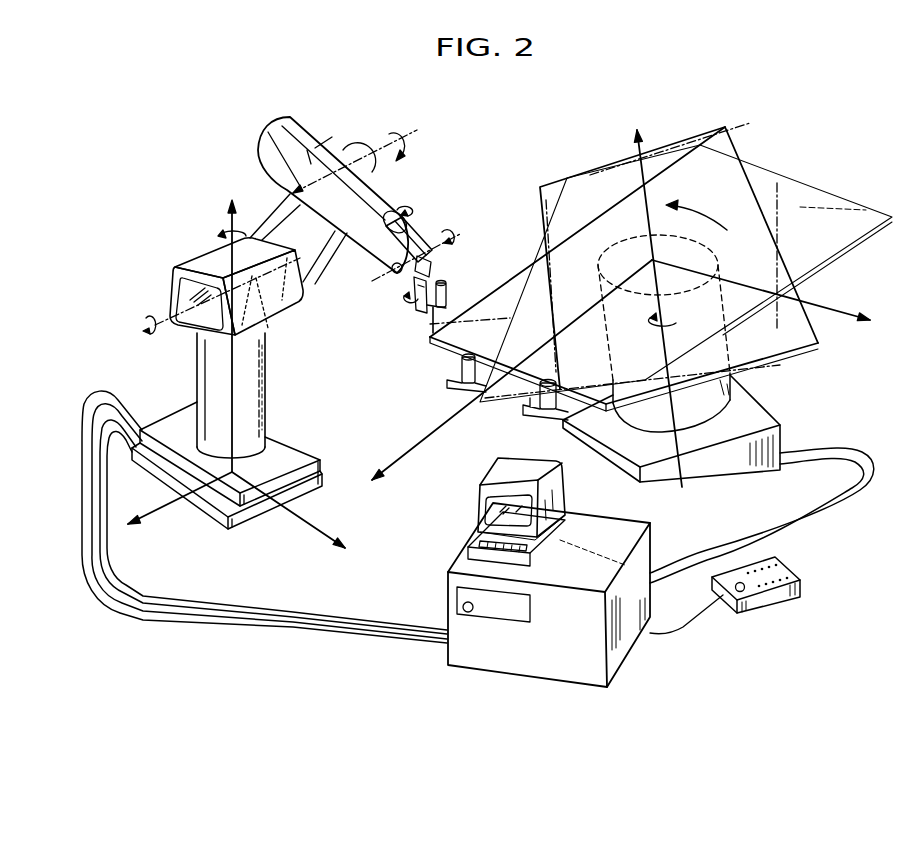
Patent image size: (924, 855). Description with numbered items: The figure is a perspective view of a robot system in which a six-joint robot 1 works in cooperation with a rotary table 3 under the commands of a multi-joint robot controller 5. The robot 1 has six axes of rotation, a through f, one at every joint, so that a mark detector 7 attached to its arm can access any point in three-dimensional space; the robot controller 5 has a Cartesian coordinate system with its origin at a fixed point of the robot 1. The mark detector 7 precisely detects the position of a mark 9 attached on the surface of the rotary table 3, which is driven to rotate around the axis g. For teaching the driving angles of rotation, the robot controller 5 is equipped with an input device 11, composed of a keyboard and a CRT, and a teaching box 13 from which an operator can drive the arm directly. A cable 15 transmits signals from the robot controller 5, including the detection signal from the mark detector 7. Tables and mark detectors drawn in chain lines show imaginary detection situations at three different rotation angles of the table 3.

The 6-joint robot 1 is at (245, 104).
The rotary table 3 is at (700, 98).
The multi-joint robot controller 5 is at (620, 700).
The mark detector 7 is at (430, 330).
The mark 9 is at (432, 343).
The input device 11 is at (478, 545).
The teaching box 13 is at (780, 568).
The cable 15 is at (378, 637).